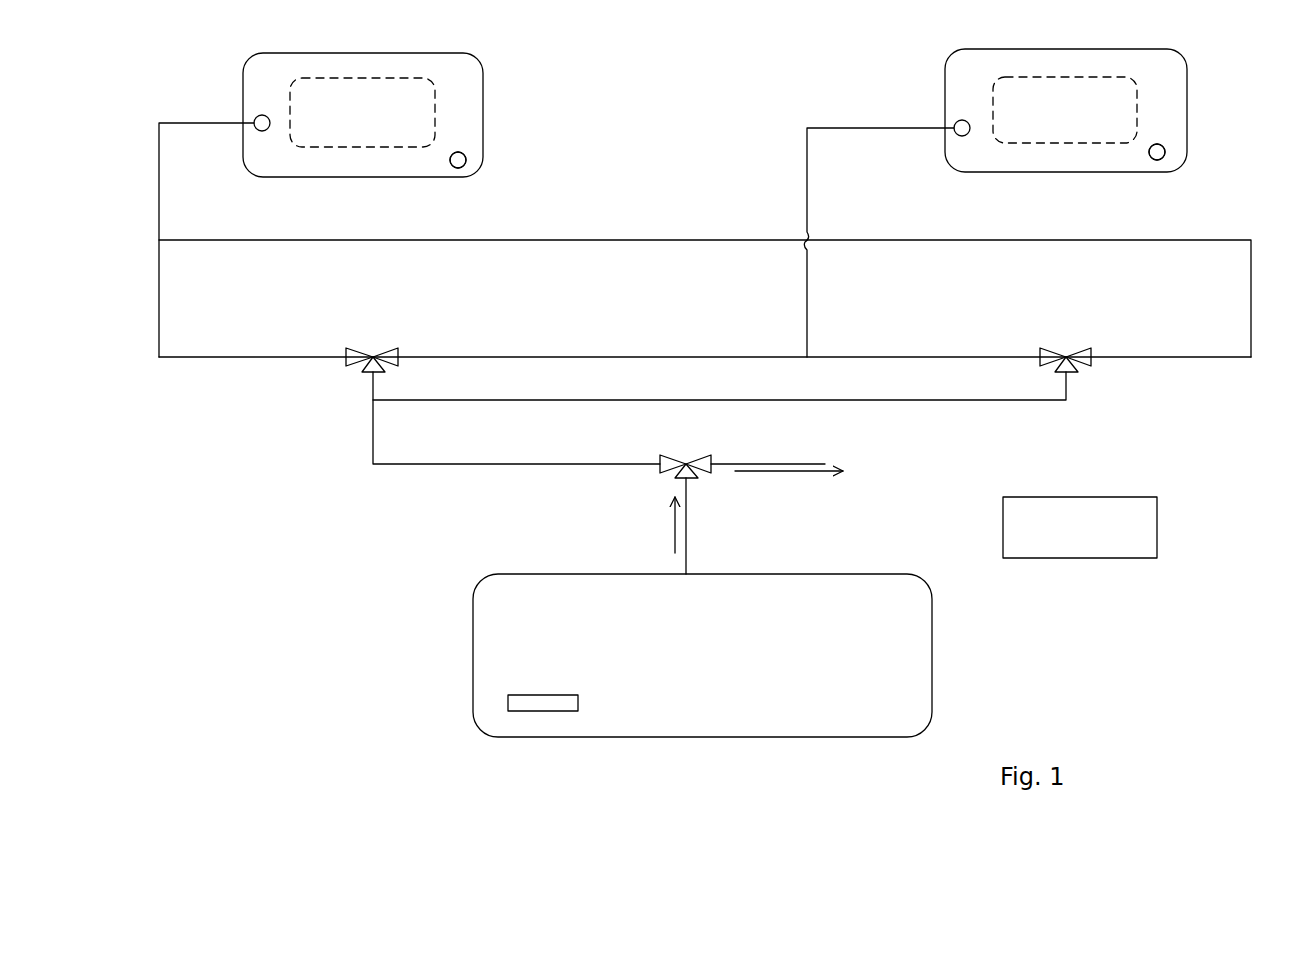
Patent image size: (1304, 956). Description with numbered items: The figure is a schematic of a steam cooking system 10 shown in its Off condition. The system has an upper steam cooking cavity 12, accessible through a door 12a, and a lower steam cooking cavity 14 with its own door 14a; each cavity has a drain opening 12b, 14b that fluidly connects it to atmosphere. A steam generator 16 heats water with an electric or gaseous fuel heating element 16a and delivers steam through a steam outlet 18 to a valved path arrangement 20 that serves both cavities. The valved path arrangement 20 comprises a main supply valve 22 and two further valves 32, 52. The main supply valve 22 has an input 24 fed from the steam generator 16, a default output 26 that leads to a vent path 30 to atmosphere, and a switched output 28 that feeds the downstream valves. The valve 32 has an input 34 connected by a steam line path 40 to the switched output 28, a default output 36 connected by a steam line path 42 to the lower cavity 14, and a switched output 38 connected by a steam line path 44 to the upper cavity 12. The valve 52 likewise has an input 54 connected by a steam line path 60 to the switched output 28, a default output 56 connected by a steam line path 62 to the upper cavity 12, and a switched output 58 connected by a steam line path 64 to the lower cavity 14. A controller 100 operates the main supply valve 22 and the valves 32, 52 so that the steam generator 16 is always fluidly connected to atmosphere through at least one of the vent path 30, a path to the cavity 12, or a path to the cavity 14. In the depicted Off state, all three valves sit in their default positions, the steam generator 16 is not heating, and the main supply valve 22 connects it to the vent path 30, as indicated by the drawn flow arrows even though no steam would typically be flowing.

The steam cooking system 10 is at (836, 45).
The steam cooking cavity 12 is at (483, 126).
The door 12a is at (402, 77).
The drain opening 12b is at (466, 160).
The steam cooking cavity 14 is at (1182, 110).
The door 14a is at (1040, 75).
The drain opening 14b is at (1166, 152).
The steam generator 16 is at (780, 573).
The heating element 16a is at (508, 710).
The steam outlet 18 is at (690, 572).
The valved path arrangement 20 is at (322, 464).
The main supply valve 22 is at (684, 468).
The input 24 is at (672, 482).
The default output 26 is at (706, 480).
The switched output 28 is at (665, 457).
The vent path 30 is at (785, 460).
The valve 32 is at (370, 354).
The input 34 is at (362, 372).
The default output 36 is at (395, 372).
The switched output 38 is at (355, 350).
The steam line path 40 is at (373, 395).
The steam line path 42 is at (650, 357).
The steam line path 44 is at (159, 312).
The valve 52 is at (1057, 349).
The input 54 is at (1055, 370).
The default output 56 is at (1083, 368).
The switched output 58 is at (1043, 350).
The steam line path 60 is at (918, 400).
The steam line path 62 is at (1027, 241).
The steam line path 64 is at (876, 356).
The controller 100 is at (1080, 527).